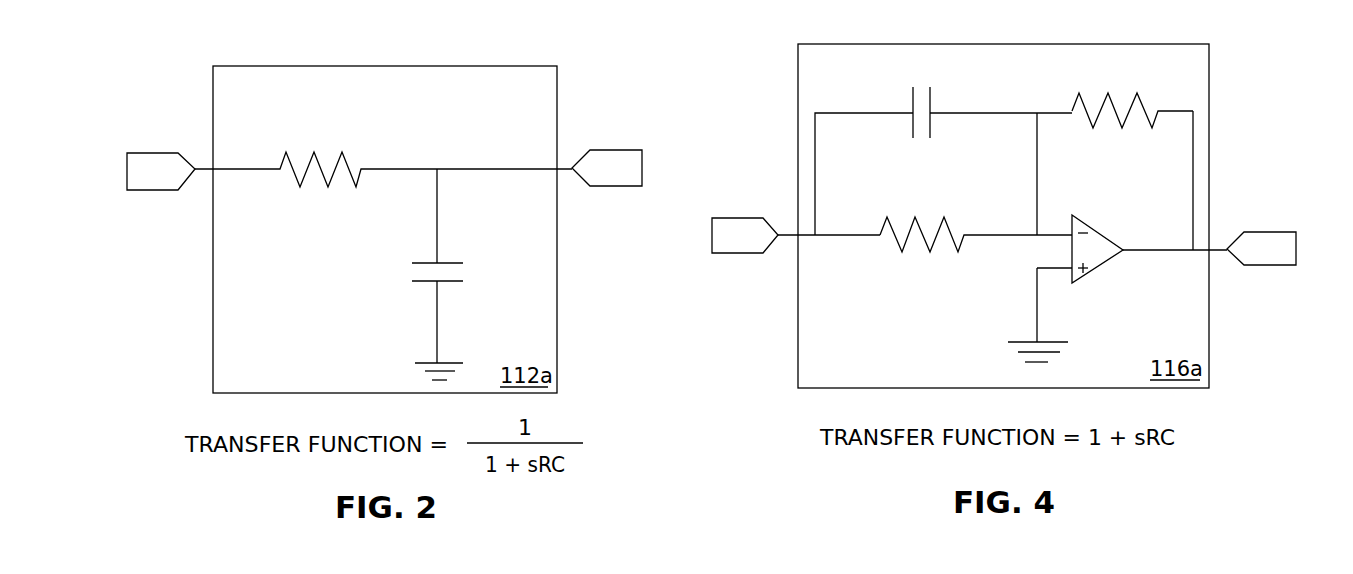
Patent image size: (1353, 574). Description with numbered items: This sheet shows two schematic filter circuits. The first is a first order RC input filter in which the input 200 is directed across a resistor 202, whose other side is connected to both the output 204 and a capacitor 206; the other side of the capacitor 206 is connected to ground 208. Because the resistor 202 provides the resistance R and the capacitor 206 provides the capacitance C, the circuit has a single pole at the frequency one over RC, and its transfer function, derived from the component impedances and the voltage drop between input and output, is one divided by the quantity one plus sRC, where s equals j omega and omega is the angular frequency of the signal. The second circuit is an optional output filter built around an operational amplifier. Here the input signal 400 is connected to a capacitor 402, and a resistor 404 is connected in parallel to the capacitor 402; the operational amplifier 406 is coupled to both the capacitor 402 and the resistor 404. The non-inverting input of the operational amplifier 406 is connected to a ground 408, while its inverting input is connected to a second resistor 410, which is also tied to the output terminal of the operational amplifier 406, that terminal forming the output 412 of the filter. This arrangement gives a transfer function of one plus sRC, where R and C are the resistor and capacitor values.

In FIG. 2, the input 200 is at (132, 153).
In FIG. 2, the resistor 202 is at (313, 152).
In FIG. 2, the output 204 is at (641, 150).
In FIG. 2, the capacitor 206 is at (420, 263).
In FIG. 2, the ground 208 is at (413, 363).
In FIG. 4, the input signal 400 is at (730, 254).
In FIG. 4, the capacitor 402 is at (925, 143).
In FIG. 4, the resistor 404 is at (935, 253).
In FIG. 4, the operational amplifier 406 is at (1078, 283).
In FIG. 4, the ground 408 is at (1010, 342).
In FIG. 4, the second resistor 410 is at (1113, 128).
In FIG. 4, the output 412 is at (1258, 266).